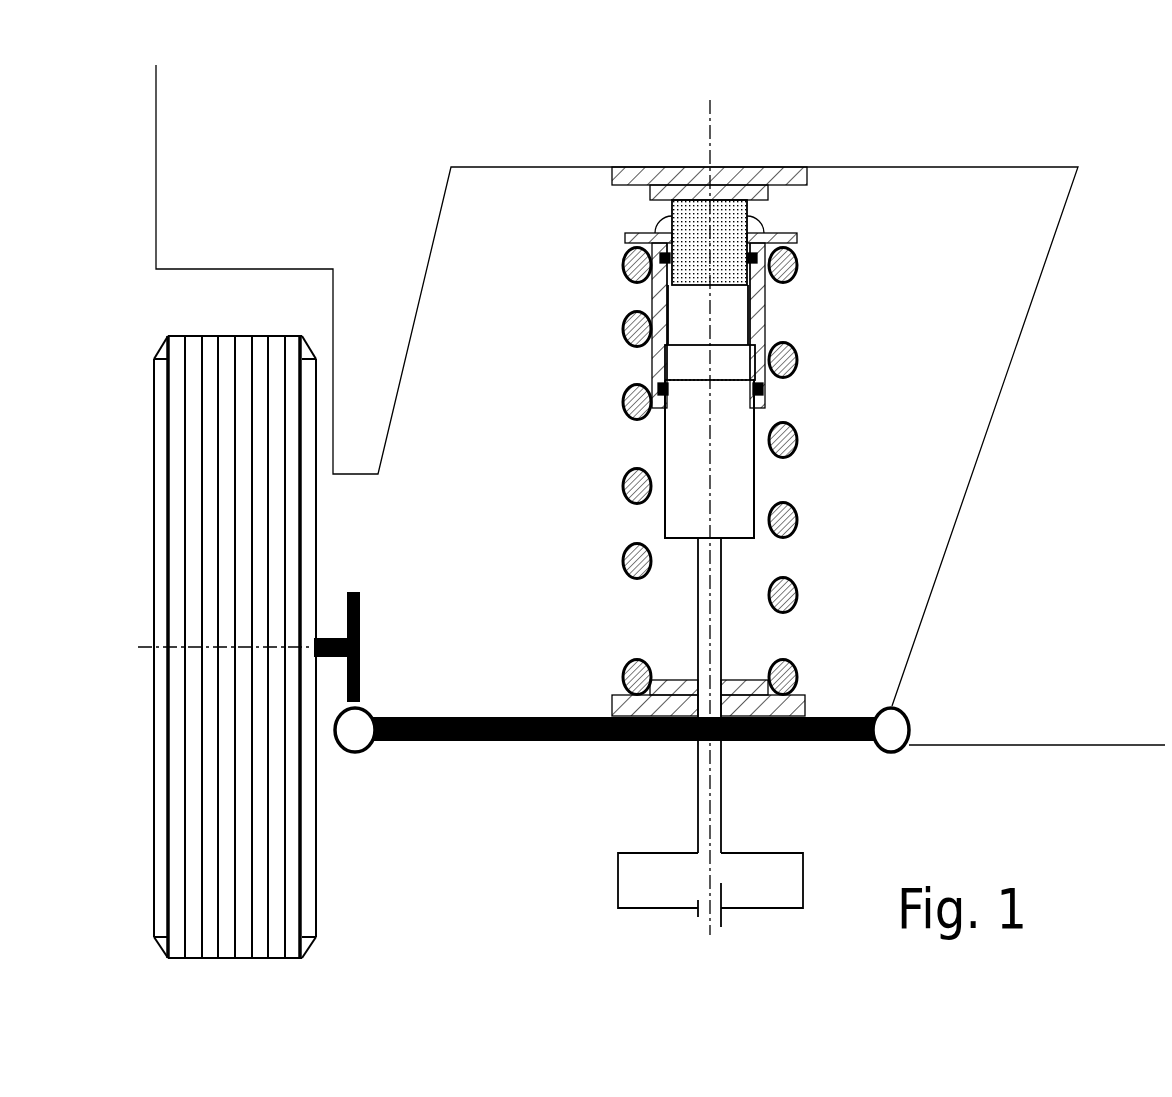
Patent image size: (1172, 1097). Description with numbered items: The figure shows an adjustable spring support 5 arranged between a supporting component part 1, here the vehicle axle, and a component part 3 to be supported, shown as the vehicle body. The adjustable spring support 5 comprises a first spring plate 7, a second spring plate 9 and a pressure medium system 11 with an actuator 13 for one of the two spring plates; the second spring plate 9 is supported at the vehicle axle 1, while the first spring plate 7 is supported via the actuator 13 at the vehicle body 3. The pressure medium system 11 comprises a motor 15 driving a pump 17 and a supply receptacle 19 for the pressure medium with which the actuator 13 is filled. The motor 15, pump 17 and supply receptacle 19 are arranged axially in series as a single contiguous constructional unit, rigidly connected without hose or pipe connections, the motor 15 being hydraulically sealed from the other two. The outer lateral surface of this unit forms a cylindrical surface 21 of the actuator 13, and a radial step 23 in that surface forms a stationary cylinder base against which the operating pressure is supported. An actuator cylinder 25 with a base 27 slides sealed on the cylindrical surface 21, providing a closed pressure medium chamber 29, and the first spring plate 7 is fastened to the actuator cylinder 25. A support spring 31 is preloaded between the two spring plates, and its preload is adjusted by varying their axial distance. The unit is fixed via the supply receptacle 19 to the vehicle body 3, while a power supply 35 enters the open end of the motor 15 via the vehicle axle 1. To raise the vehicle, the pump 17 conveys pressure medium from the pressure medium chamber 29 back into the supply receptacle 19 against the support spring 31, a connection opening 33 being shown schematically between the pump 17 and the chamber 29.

The supporting component part 1 is at (553, 745).
The component part to be supported 3 is at (1030, 163).
The adjustable spring support 5 is at (791, 494).
The first spring plate 7 is at (625, 237).
The second spring plate 9 is at (778, 705).
The pressure medium system 11 is at (765, 222).
The actuator 13 is at (650, 222).
The motor 15 is at (733, 476).
The pump 17 is at (723, 320).
The supply receptacle 19 is at (687, 222).
The cylindrical surface 21 is at (657, 362).
The radial step 23 is at (752, 345).
The actuator cylinder 25 is at (660, 303).
The base 27 is at (790, 238).
The pressure medium chamber 29 is at (750, 292).
The support spring 31 is at (787, 603).
The connection opening 33 is at (670, 297).
The power supply 35 is at (722, 627).